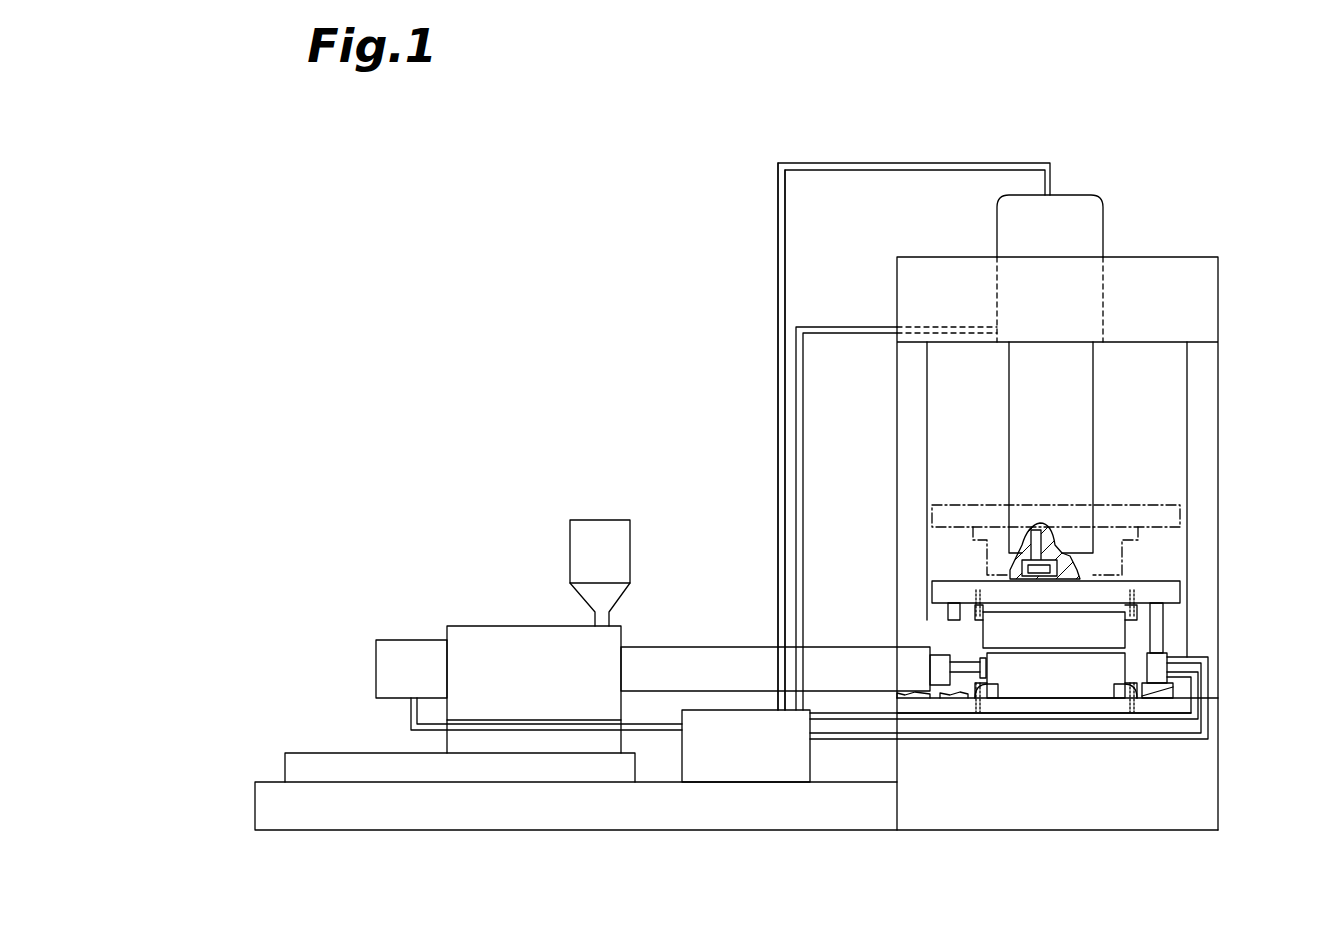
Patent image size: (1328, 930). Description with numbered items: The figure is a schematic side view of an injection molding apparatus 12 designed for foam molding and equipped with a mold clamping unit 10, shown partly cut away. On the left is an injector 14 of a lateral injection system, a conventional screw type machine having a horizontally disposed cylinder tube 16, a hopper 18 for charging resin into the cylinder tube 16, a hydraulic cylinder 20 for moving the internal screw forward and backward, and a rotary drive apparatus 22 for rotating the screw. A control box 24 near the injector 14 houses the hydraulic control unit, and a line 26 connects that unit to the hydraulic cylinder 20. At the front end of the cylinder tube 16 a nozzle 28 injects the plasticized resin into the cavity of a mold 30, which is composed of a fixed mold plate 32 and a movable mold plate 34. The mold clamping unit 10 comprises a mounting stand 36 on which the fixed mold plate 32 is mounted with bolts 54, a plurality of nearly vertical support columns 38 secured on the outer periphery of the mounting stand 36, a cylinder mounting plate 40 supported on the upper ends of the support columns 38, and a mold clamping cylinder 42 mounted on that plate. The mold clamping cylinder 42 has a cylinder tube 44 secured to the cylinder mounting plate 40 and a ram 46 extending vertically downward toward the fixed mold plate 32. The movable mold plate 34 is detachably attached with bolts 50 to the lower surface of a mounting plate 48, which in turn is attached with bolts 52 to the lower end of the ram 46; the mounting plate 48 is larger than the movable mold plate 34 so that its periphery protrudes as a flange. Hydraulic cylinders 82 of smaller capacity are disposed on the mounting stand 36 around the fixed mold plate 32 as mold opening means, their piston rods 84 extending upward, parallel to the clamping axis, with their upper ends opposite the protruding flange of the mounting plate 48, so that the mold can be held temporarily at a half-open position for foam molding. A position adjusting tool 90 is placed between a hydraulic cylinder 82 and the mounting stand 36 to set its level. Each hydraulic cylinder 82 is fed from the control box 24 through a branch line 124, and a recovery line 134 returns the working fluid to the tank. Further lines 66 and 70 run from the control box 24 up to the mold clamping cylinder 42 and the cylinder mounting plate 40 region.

The mold clamping unit 10 is at (1230, 260).
The injection molding apparatus 12 is at (485, 572).
The injector 14 is at (447, 626).
The cylinder tube 16 is at (745, 663).
The hopper 18 is at (619, 533).
The hydraulic cylinder 20 is at (396, 656).
The rotary drive apparatus 22 is at (533, 640).
The control box 24 is at (722, 772).
The line 26 is at (655, 718).
The nozzle 28 is at (1021, 701).
The mold 30 is at (1002, 714).
The fixed mold plate 32 is at (1062, 688).
The movable mold plate 34 is at (1112, 551).
The mounting stand 36 is at (1207, 771).
The support columns 38 is at (908, 392).
The cylinder mounting plate 40 is at (1153, 268).
The mold clamping cylinder 42 is at (1070, 192).
The cylinder tube 44 is at (1087, 216).
The ram 46 is at (1071, 388).
The mounting plate 48 is at (1172, 505).
The bolts 50 is at (1137, 612).
The bolts 52 is at (1040, 523).
The bolts 54 is at (999, 698).
The control line 66 is at (778, 415).
The control line 70 is at (835, 327).
The hydraulic cylinder 82 is at (1162, 660).
The piston rods 84 is at (947, 613).
The position adjusting tool 90 is at (1158, 694).
The branch line 124 is at (838, 722).
The recovery line 134 is at (888, 742).